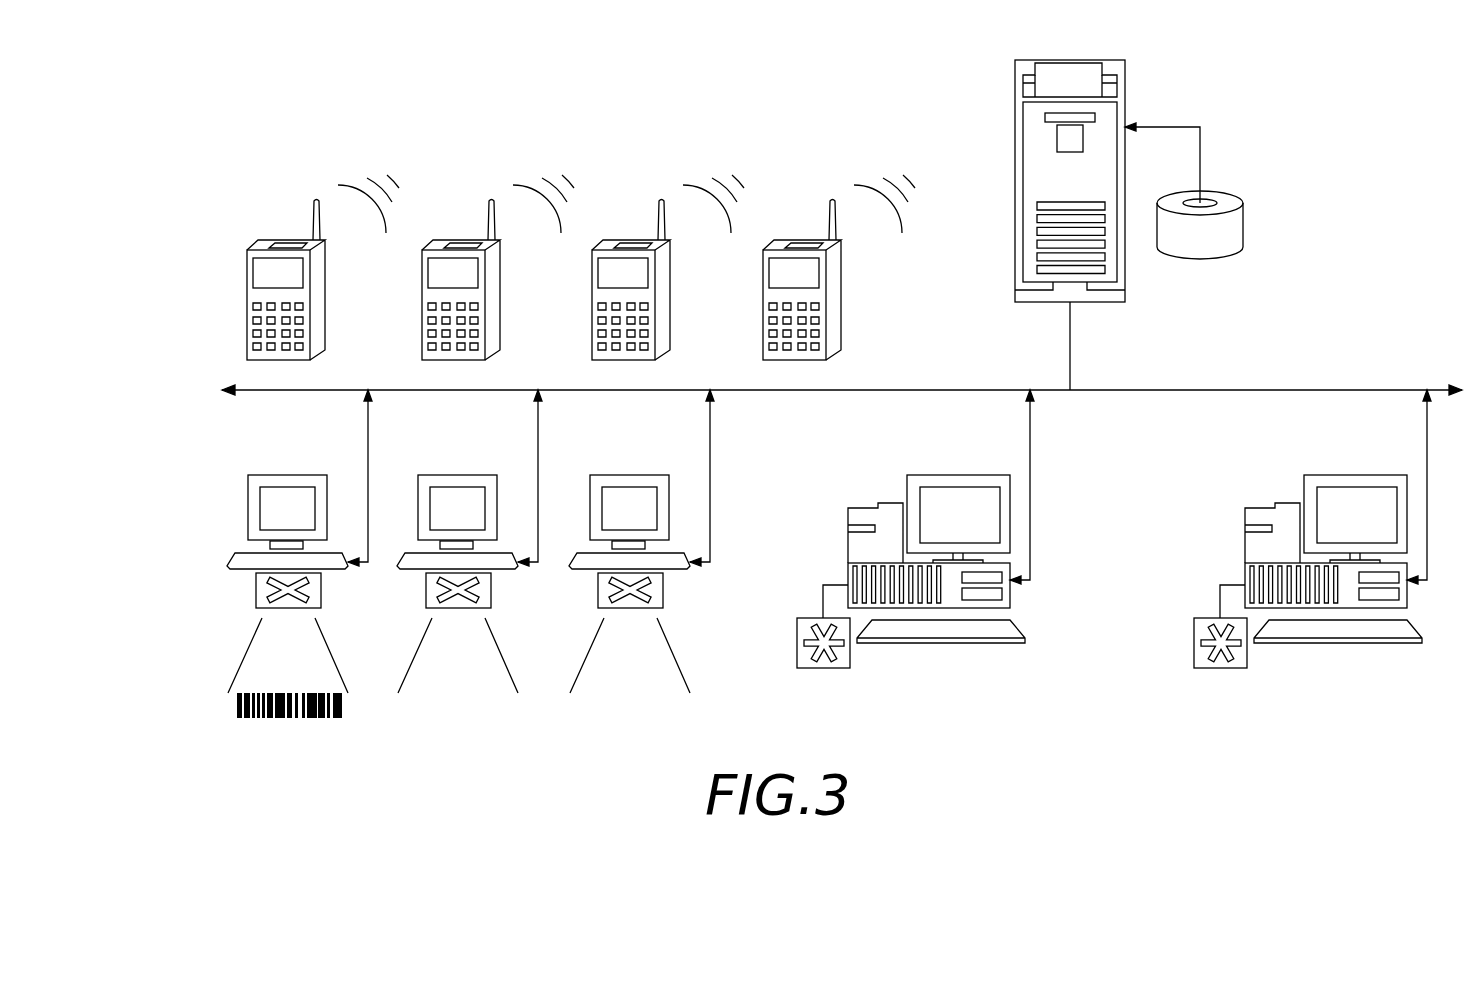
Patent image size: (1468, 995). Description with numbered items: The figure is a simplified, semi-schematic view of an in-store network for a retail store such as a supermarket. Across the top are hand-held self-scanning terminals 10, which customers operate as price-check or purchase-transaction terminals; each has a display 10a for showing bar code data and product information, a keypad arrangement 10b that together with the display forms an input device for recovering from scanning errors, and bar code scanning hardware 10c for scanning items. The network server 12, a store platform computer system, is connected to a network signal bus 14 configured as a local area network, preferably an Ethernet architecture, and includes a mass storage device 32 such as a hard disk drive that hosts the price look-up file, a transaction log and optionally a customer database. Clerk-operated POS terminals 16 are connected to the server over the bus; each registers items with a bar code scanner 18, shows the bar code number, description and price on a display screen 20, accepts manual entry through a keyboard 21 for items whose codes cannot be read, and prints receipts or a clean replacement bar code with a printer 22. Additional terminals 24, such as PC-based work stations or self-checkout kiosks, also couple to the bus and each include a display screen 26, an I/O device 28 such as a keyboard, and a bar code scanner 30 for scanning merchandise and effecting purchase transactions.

The self-scanning terminal 10 is at (283, 267).
The display 10a is at (227, 264).
The keypad arrangement 10b is at (333, 341).
The bar code scanning hardware 10c is at (280, 201).
The network server 12 is at (1015, 112).
The network signal bus 14 is at (1327, 390).
The POS terminal 16 is at (892, 550).
The bar code scanner 18 is at (800, 605).
The display screen 20 is at (958, 475).
The keyboard 21 is at (932, 665).
The printer 22 is at (884, 548).
The additional terminals 24 is at (262, 554).
The display screen 26 is at (304, 465).
The I/O device 28 is at (268, 523).
The bar code scanner 30 is at (237, 605).
The mass storage device 32 is at (1233, 227).